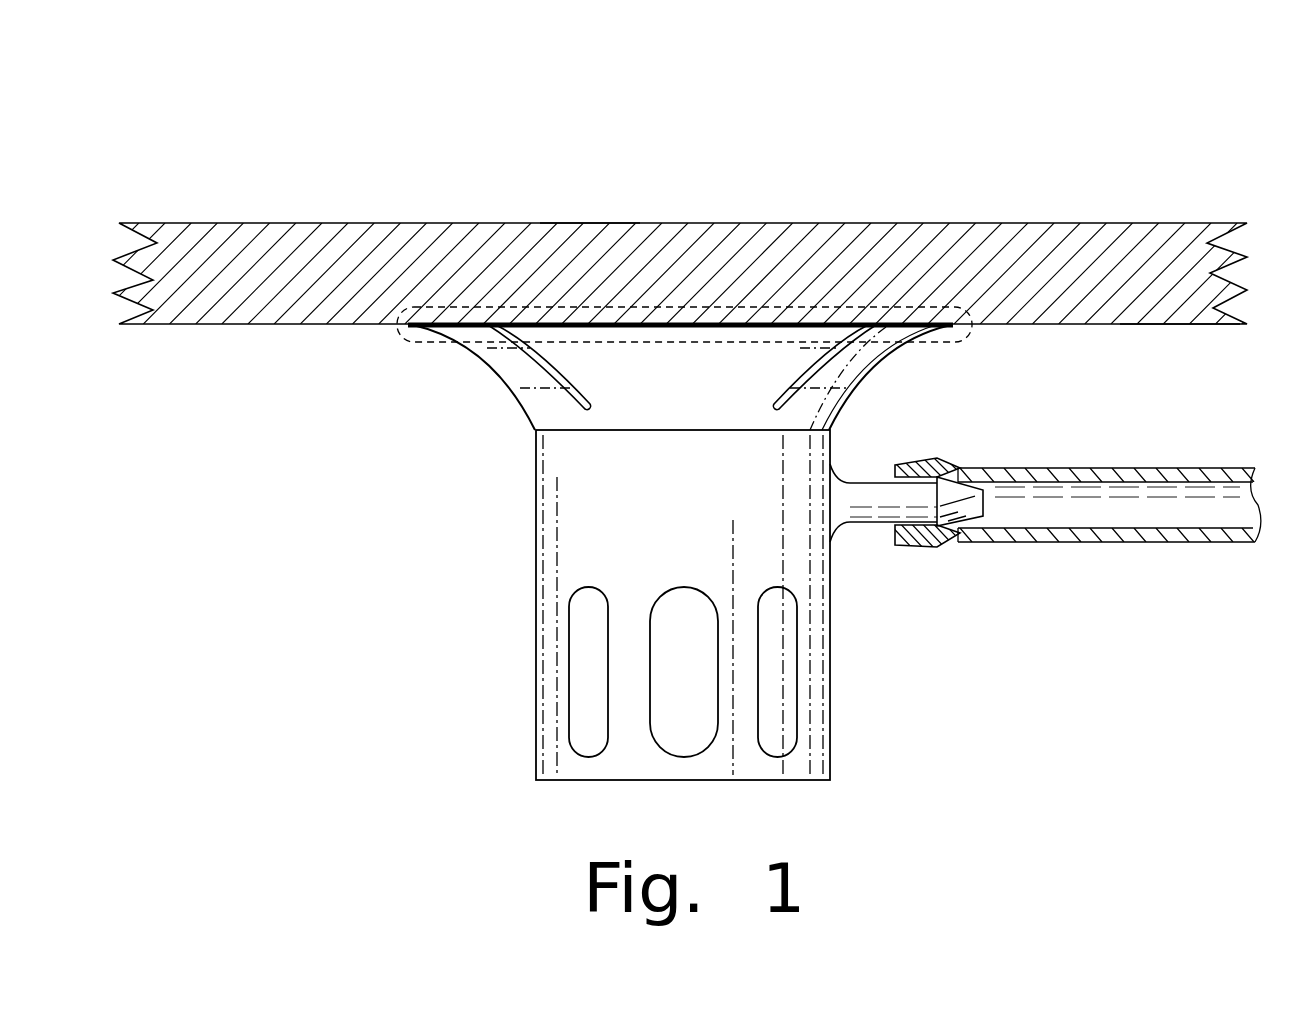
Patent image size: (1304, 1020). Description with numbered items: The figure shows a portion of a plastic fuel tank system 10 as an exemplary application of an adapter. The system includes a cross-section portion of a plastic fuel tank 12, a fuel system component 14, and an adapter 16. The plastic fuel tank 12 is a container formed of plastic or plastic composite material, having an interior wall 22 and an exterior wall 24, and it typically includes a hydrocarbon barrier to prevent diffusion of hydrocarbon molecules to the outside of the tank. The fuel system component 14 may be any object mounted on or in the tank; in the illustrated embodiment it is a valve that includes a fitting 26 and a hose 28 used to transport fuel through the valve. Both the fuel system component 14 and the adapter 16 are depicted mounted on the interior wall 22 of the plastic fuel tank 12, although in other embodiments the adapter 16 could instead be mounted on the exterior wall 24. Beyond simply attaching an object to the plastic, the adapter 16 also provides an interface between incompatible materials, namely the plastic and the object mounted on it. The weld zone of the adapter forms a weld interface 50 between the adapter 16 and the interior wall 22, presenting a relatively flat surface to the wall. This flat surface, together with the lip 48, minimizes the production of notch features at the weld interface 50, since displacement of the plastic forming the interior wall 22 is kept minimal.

The plastic fuel tank system 10 is at (877, 158).
The plastic fuel tank 12 is at (668, 240).
The fuel system component 14 is at (775, 540).
The adapter 16 is at (693, 395).
The interior wall 22 is at (1181, 325).
The exterior wall 24 is at (586, 222).
The fitting 26 is at (967, 526).
The hose 28 is at (1068, 467).
The lip 48 is at (413, 328).
The weld interface 50 is at (402, 343).